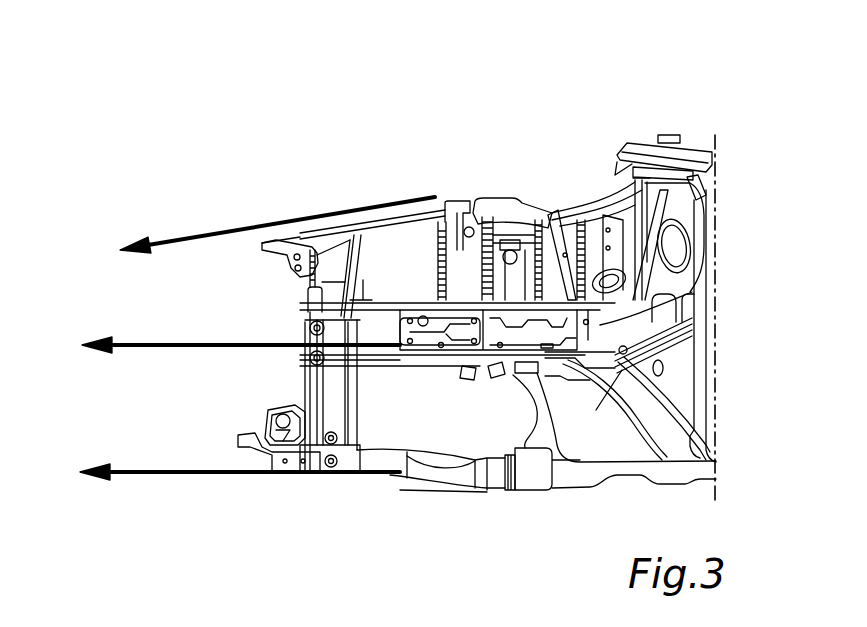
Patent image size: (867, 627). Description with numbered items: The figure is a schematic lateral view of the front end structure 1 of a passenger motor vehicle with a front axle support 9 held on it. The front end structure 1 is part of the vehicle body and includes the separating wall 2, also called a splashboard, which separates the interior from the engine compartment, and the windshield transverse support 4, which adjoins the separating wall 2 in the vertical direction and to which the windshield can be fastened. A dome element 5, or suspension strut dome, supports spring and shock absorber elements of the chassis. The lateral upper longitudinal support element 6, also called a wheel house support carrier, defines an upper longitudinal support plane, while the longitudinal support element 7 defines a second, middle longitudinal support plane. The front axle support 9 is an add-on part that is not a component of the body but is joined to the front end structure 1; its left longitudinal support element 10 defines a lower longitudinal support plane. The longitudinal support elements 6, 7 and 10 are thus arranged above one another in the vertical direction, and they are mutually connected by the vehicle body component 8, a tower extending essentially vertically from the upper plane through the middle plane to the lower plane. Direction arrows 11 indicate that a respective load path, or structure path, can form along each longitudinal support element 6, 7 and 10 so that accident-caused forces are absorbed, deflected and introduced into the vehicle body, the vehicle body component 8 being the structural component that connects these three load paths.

The front end structure 1 is at (562, 208).
The separating wall 2 is at (688, 283).
The windshield transverse support 4 is at (693, 152).
The dome element 5 is at (507, 216).
The upper longitudinal support element 6 is at (425, 212).
The longitudinal support element 7 is at (457, 352).
The vehicle body component 8 is at (358, 297).
The front axle support 9 is at (523, 473).
The longitudinal support element 10 is at (406, 470).
The direction arrows 11 is at (236, 230).